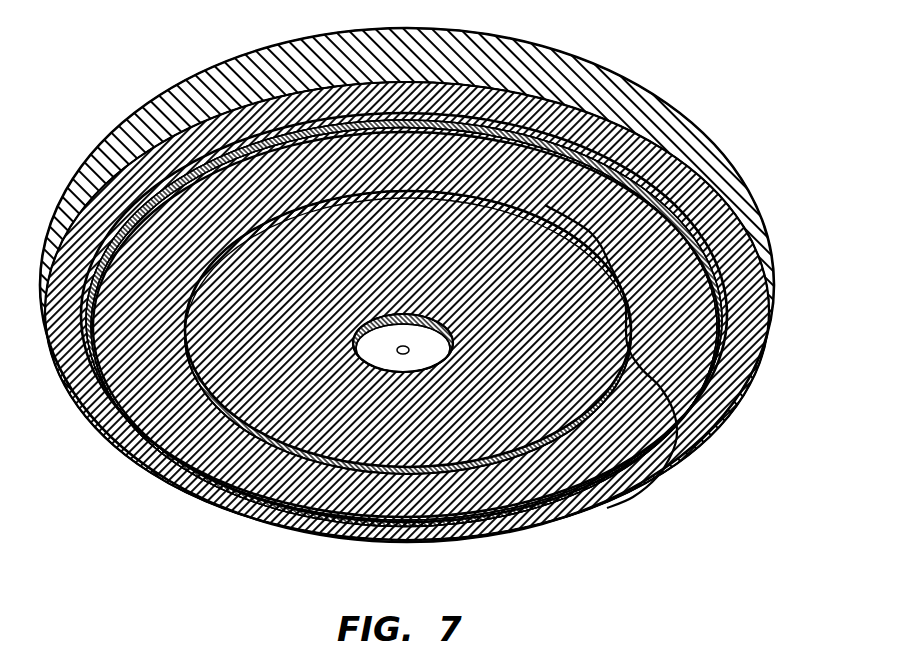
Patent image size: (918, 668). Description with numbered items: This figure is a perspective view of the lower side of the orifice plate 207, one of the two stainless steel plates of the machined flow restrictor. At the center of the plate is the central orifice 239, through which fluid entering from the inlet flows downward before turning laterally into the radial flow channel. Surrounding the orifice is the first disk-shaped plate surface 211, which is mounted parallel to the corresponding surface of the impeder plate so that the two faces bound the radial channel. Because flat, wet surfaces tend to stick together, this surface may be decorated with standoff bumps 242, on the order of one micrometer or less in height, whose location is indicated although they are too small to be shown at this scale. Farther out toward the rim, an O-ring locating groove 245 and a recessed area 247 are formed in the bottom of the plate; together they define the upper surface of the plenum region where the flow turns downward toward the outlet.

The orifice plate 207 is at (449, 319).
The first disk-shaped plate surface 211 is at (403, 350).
The central orifice 239 is at (413, 352).
The standoff bumps 242 is at (407, 367).
The O-ring locating groove 245 is at (722, 325).
The recessed area 247 is at (572, 348).